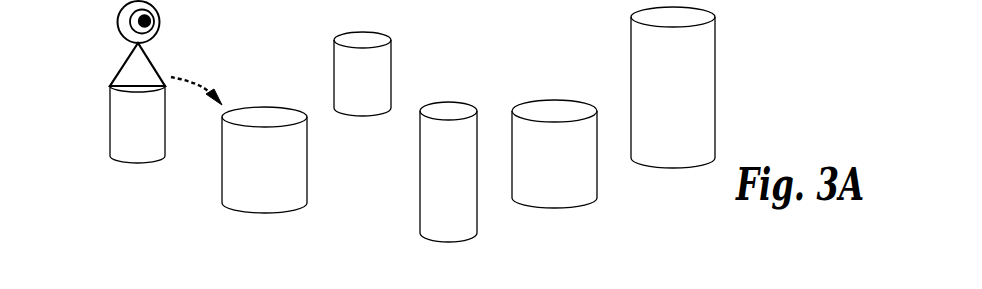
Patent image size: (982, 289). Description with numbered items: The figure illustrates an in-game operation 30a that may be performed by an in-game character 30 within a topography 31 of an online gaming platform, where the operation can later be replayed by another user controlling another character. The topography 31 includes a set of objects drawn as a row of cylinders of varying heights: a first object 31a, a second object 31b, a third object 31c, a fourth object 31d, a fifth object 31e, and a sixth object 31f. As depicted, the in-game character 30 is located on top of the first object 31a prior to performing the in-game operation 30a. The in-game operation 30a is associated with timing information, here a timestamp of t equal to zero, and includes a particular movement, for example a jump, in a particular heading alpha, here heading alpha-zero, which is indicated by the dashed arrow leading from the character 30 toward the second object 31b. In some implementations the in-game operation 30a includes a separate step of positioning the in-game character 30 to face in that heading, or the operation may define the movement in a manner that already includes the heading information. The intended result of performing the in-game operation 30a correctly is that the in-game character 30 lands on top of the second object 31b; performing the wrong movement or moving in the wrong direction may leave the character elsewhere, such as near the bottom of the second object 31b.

The in-game character 30 is at (133, 69).
The in-game operation 30a is at (183, 75).
The topography 31 is at (133, 188).
The first object 31a is at (155, 155).
The second object 31b is at (285, 205).
The third object 31c is at (383, 105).
The fourth object 31d is at (466, 234).
The fifth object 31e is at (572, 200).
The sixth object 31f is at (690, 159).